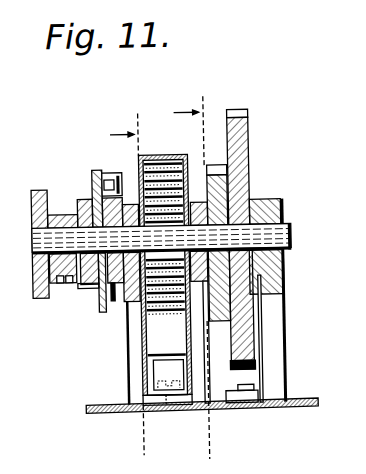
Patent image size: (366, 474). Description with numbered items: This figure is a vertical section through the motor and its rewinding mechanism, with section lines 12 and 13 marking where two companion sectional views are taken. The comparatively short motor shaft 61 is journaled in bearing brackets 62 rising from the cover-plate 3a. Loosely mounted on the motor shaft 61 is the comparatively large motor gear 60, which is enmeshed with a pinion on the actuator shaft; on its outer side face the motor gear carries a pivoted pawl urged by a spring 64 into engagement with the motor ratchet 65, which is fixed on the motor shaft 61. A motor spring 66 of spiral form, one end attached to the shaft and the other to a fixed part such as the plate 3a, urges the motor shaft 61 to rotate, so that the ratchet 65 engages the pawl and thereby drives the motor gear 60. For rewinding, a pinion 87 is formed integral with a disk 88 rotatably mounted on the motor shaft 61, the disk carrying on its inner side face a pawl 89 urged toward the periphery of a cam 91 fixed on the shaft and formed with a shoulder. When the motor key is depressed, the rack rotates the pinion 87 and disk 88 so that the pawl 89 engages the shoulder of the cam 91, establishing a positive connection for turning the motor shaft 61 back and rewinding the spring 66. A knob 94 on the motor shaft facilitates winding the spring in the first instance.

The cover-plate 3a is at (86, 411).
The section line 12- 12 is at (133, 287).
The section line 13- 13 is at (197, 277).
The motor gear 60 is at (240, 114).
The motor shaft 61 is at (32, 248).
The bearing brackets 62 is at (126, 361).
The spring 64 is at (161, 236).
The motor ratchet 65 is at (217, 169).
The motor spring 66 is at (161, 357).
The pinion 87 is at (80, 288).
The disk 88 is at (99, 312).
The pawl 89 is at (109, 176).
The cam 91 is at (113, 300).
The knob 94 is at (35, 295).